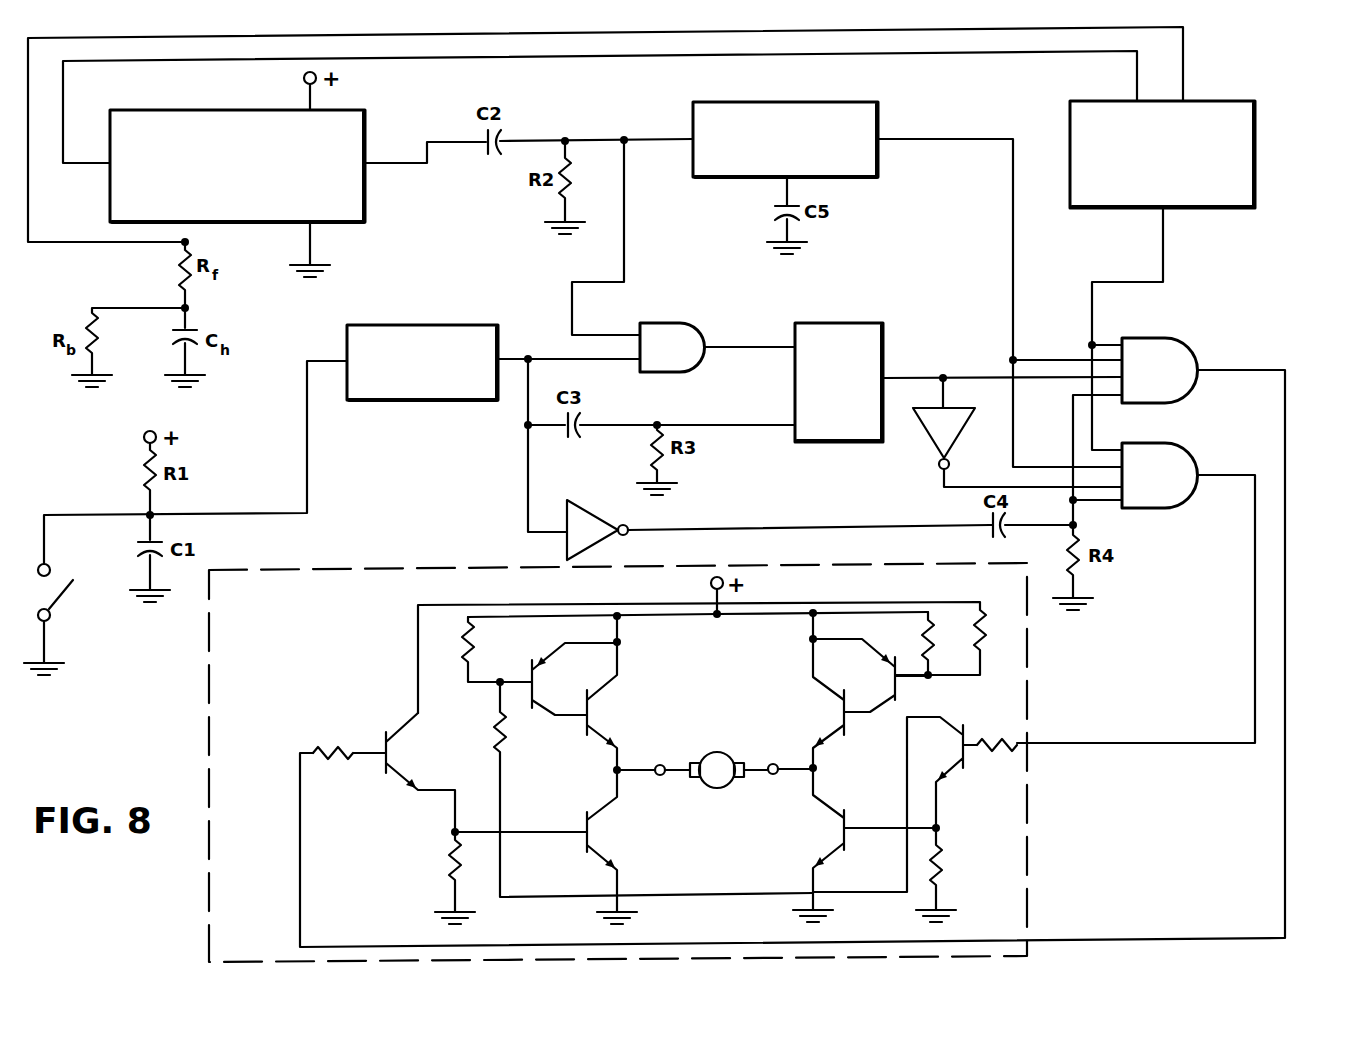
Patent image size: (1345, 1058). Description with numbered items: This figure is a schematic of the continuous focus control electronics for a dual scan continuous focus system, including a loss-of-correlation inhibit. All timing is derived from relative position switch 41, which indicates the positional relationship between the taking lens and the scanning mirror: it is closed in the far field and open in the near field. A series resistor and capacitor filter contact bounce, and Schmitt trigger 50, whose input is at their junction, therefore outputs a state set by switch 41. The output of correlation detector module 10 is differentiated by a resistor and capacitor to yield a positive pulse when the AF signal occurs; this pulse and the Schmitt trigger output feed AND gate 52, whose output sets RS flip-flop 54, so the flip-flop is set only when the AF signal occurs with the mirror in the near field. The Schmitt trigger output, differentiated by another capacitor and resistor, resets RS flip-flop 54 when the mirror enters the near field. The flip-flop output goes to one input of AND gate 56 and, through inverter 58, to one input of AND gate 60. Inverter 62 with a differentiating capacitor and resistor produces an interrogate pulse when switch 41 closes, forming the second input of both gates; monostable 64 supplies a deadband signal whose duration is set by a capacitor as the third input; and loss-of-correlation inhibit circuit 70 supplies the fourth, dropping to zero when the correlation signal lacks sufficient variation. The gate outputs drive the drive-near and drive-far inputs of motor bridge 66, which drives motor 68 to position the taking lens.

The module 10 is at (168, 110).
The relative position switch 41 is at (58, 602).
The Schmitt trigger 50 is at (390, 325).
The AND gate 52 is at (663, 322).
The RS flip-flop 54 is at (837, 323).
The AND gate 56 is at (1180, 338).
The inverter 58 is at (928, 436).
The AND gate 60 is at (1163, 508).
The inverter 62 is at (590, 500).
The monostable 64 is at (775, 102).
The motor bridge 66 is at (655, 762).
The motor 68 is at (722, 788).
The loss-of-correlation inhibit circuit 70 is at (1218, 101).